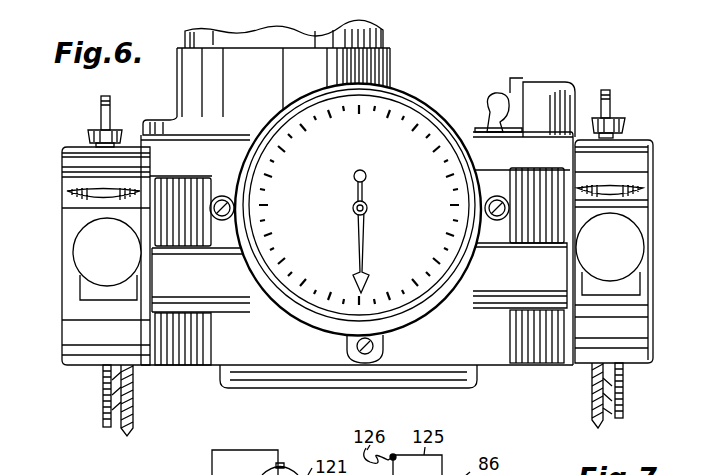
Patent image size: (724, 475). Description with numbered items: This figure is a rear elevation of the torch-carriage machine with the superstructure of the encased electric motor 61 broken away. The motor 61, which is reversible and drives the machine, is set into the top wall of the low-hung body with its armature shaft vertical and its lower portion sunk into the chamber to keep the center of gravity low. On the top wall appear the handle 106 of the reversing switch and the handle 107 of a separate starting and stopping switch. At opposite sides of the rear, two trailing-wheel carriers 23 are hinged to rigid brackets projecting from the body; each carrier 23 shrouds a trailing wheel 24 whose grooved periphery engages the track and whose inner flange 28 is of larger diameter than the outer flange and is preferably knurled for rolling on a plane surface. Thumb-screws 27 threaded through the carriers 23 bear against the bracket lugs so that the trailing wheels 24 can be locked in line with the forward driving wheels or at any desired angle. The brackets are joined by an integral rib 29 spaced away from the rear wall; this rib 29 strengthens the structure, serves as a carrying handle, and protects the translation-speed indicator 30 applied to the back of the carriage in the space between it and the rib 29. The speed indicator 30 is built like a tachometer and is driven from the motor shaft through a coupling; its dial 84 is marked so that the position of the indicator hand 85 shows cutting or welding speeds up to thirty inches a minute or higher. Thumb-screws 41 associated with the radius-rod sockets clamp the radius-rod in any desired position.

The trailing-wheel carrier 23 is at (68, 218).
The trailing wheel 24 is at (100, 413).
The thumb-screw 27 is at (80, 262).
The inner flange 28 is at (130, 437).
The integral rib 29 is at (488, 309).
The translation-speed indicator 30 is at (358, 213).
The thumb-screw 41 is at (96, 130).
The encased electric motor 61 is at (384, 33).
The dial 84 is at (360, 205).
The indicator hand 85 is at (365, 283).
The handle of reversing switch 106 is at (487, 100).
The handle of starting and stopping switch 107 is at (530, 93).